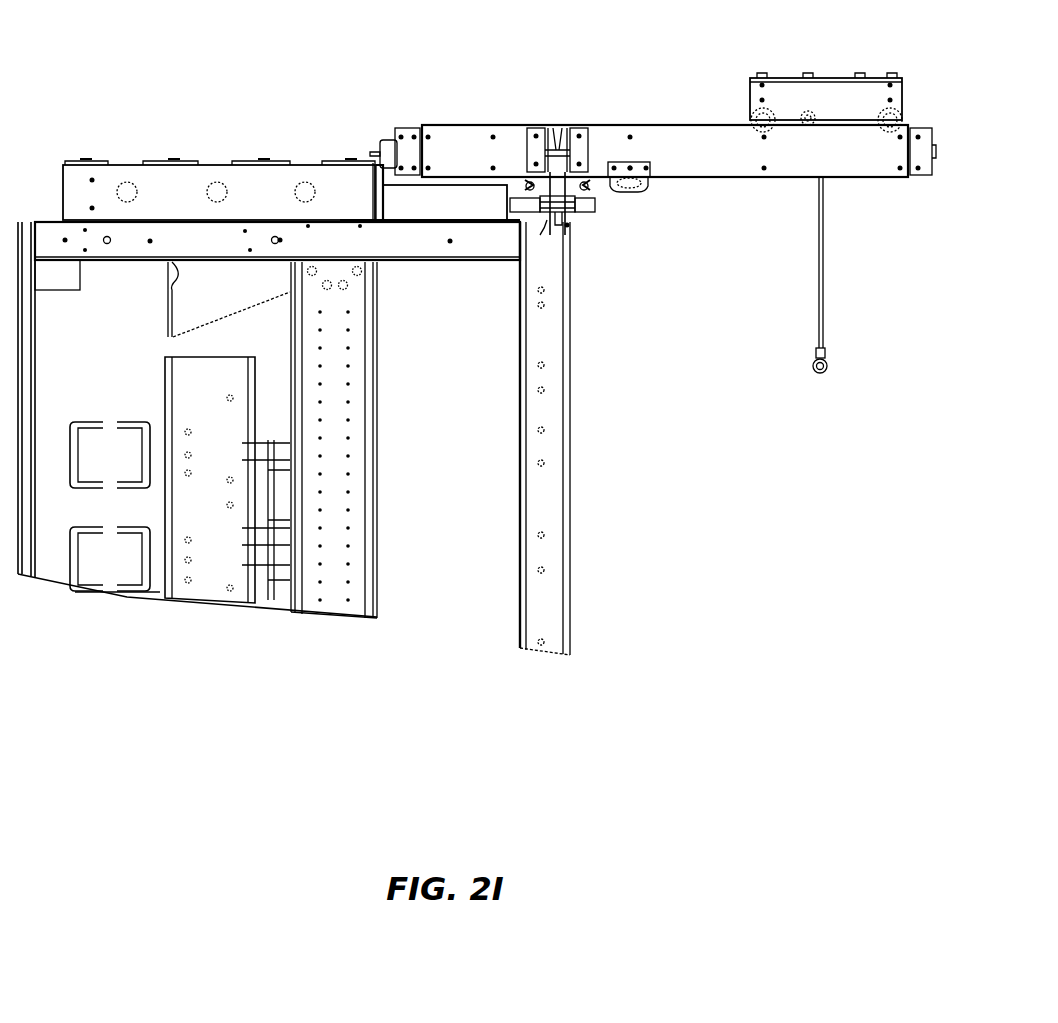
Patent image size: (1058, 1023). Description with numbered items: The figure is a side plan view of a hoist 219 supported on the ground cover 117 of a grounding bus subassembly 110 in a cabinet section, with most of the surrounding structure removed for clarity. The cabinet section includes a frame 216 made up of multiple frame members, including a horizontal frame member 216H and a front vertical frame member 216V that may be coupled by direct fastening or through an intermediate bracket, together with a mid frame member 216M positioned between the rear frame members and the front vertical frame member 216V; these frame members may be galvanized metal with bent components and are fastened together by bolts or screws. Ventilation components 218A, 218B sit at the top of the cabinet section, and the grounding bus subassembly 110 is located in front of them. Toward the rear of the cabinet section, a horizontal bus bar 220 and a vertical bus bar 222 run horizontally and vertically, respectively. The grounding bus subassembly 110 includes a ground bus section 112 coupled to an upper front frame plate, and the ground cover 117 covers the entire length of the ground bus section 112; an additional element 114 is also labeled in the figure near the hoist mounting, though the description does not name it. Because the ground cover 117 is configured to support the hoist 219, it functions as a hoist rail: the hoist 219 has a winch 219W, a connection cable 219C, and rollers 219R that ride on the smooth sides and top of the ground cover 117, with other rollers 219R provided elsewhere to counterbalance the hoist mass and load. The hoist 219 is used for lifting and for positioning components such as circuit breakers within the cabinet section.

The grounding bus subassembly 110 is at (560, 232).
The ground bus section 112 is at (547, 222).
The hoist mount 114 is at (560, 140).
The ground cover 117 is at (568, 222).
The frame 216 is at (563, 515).
The horizontal frame member 216H is at (110, 262).
The front vertical frame member 216V is at (570, 375).
The mid frame member 216M is at (378, 445).
The ventilation component 218A is at (470, 190).
The ventilation component 218B is at (205, 165).
The hoist 219 is at (678, 116).
The connection cable 219C is at (378, 150).
The rollers 219R is at (517, 200).
The winch 219W is at (833, 78).
The horizontal bus bar 220 is at (95, 422).
The vertical bus bar 222 is at (165, 365).